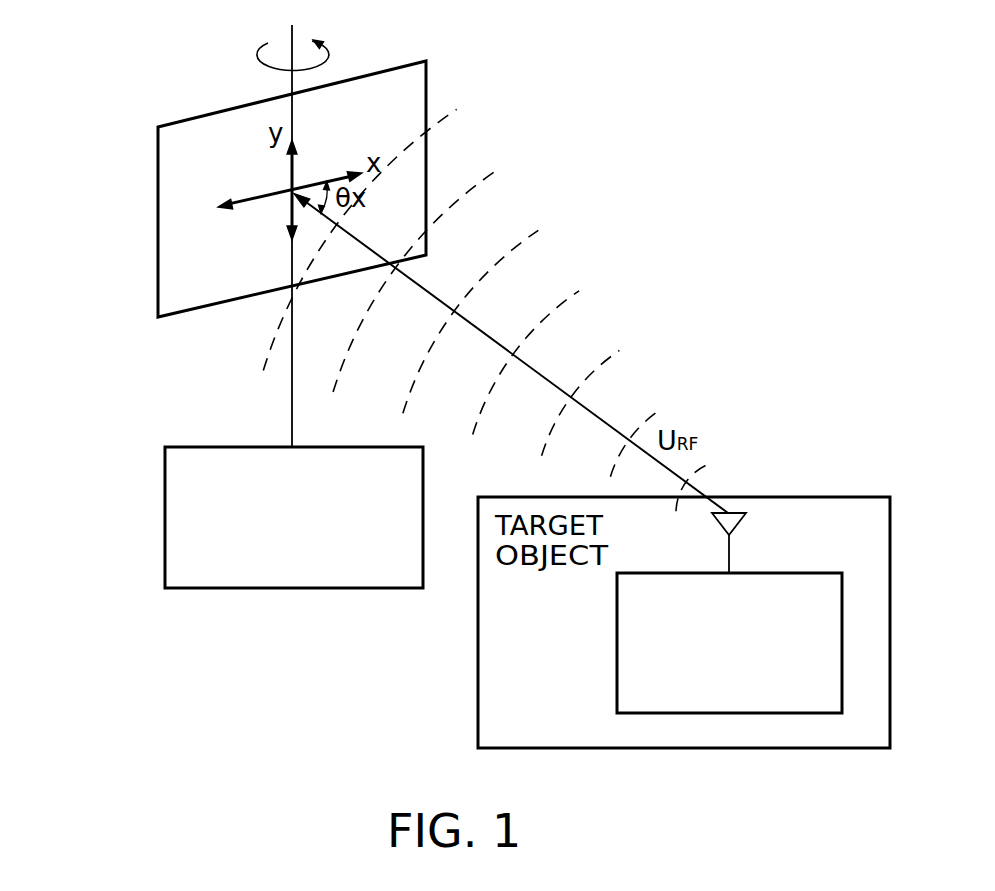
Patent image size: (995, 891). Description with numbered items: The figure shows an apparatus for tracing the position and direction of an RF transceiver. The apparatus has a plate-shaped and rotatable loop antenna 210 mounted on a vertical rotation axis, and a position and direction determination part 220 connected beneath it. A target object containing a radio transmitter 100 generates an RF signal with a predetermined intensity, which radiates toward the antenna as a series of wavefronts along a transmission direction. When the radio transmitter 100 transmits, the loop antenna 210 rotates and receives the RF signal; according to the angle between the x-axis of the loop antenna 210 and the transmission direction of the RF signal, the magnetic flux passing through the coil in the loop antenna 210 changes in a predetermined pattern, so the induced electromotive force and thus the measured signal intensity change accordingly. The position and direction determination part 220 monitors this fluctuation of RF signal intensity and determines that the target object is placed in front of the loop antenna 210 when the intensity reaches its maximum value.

The radio transmitter 100 is at (617, 657).
The loop antenna 210 is at (158, 225).
The position and direction determination part 220 is at (165, 518).